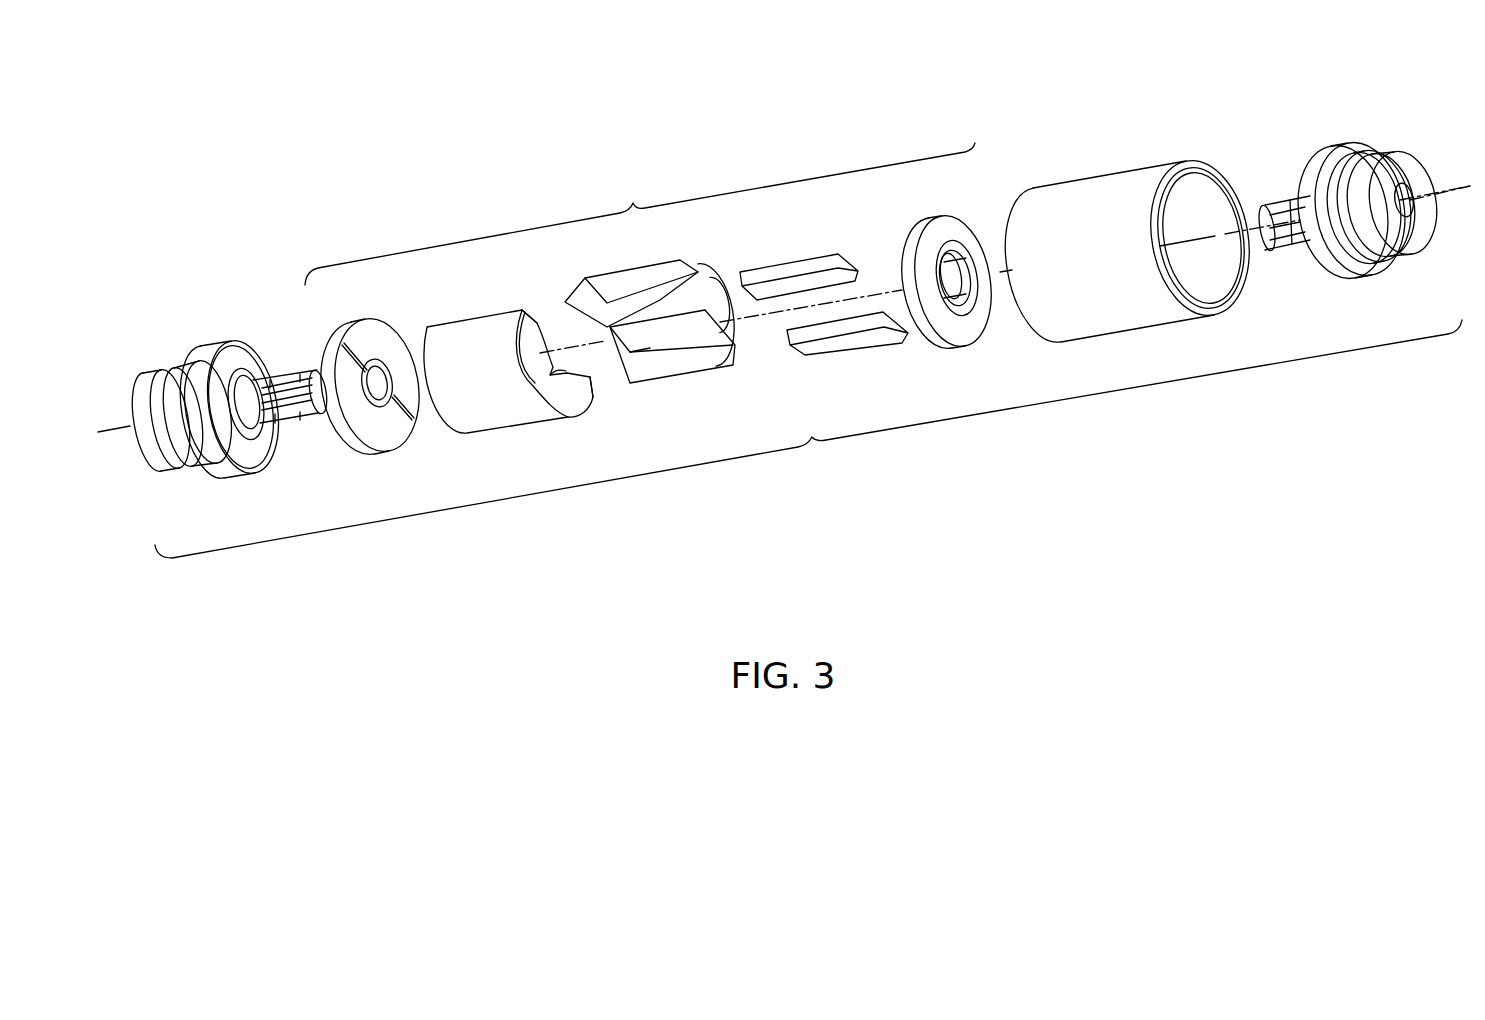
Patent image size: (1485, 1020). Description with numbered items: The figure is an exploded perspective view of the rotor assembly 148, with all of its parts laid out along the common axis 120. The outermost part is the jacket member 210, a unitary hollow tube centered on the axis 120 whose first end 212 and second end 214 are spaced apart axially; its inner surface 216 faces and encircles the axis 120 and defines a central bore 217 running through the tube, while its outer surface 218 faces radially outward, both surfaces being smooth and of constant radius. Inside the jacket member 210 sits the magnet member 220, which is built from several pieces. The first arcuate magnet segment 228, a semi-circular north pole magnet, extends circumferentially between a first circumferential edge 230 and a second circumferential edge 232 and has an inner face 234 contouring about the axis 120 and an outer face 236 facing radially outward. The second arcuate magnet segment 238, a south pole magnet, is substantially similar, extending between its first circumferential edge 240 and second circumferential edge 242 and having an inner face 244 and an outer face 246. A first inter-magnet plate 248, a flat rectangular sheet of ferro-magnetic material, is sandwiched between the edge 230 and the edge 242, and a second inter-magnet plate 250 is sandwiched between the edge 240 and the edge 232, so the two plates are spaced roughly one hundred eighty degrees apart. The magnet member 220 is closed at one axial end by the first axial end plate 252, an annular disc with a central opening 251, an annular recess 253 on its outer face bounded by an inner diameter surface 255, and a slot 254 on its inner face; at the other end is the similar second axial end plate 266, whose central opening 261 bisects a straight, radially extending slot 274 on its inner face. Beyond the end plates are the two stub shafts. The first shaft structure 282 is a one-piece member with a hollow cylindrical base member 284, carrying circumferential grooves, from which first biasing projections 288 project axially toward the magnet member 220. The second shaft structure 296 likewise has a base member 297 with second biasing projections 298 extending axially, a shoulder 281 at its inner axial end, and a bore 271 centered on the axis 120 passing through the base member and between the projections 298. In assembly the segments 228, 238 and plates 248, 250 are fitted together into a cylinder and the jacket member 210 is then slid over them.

The axis 120 is at (1455, 181).
The rotor assembly 148 is at (808, 439).
The jacket member 210 is at (1129, 216).
The first end 212 is at (1175, 167).
The second end 214 is at (1015, 207).
The inner surface 216 is at (1225, 280).
The central bore 217 is at (1210, 192).
The outer surface 218 is at (1095, 316).
The magnet member 220 is at (640, 214).
The first arcuate magnet segment 228 is at (661, 313).
The first circumferential edge 230 is at (594, 302).
The second circumferential edge 232 is at (702, 358).
The inner face 234 is at (655, 350).
The outer face 236 is at (653, 280).
The second arcuate magnet segment 238 is at (515, 372).
The first circumferential edge 240 is at (592, 382).
The second circumferential edge 242 is at (535, 325).
The inner face 244 is at (548, 378).
The outer face 246 is at (490, 366).
The first inter-magnet plate 248 is at (784, 254).
The second inter-magnet plate 250 is at (858, 356).
The central opening 251 is at (946, 275).
The first axial end plate 252 is at (940, 289).
The annular recess 253 is at (975, 290).
The slot 254 is at (912, 246).
The inner diameter surface 255 is at (958, 253).
The central opening 261 is at (392, 370).
The second axial end plate 266 is at (370, 397).
The bore 271 is at (322, 407).
The slot 274 is at (352, 348).
The shoulder 281 is at (228, 393).
The first shaft structure 282 is at (1366, 214).
The base member 284 is at (1353, 152).
The first biasing projections 288 is at (1276, 203).
The second shaft structure 296 is at (239, 412).
The base member 297 is at (171, 376).
The second biasing projections 298 is at (280, 382).